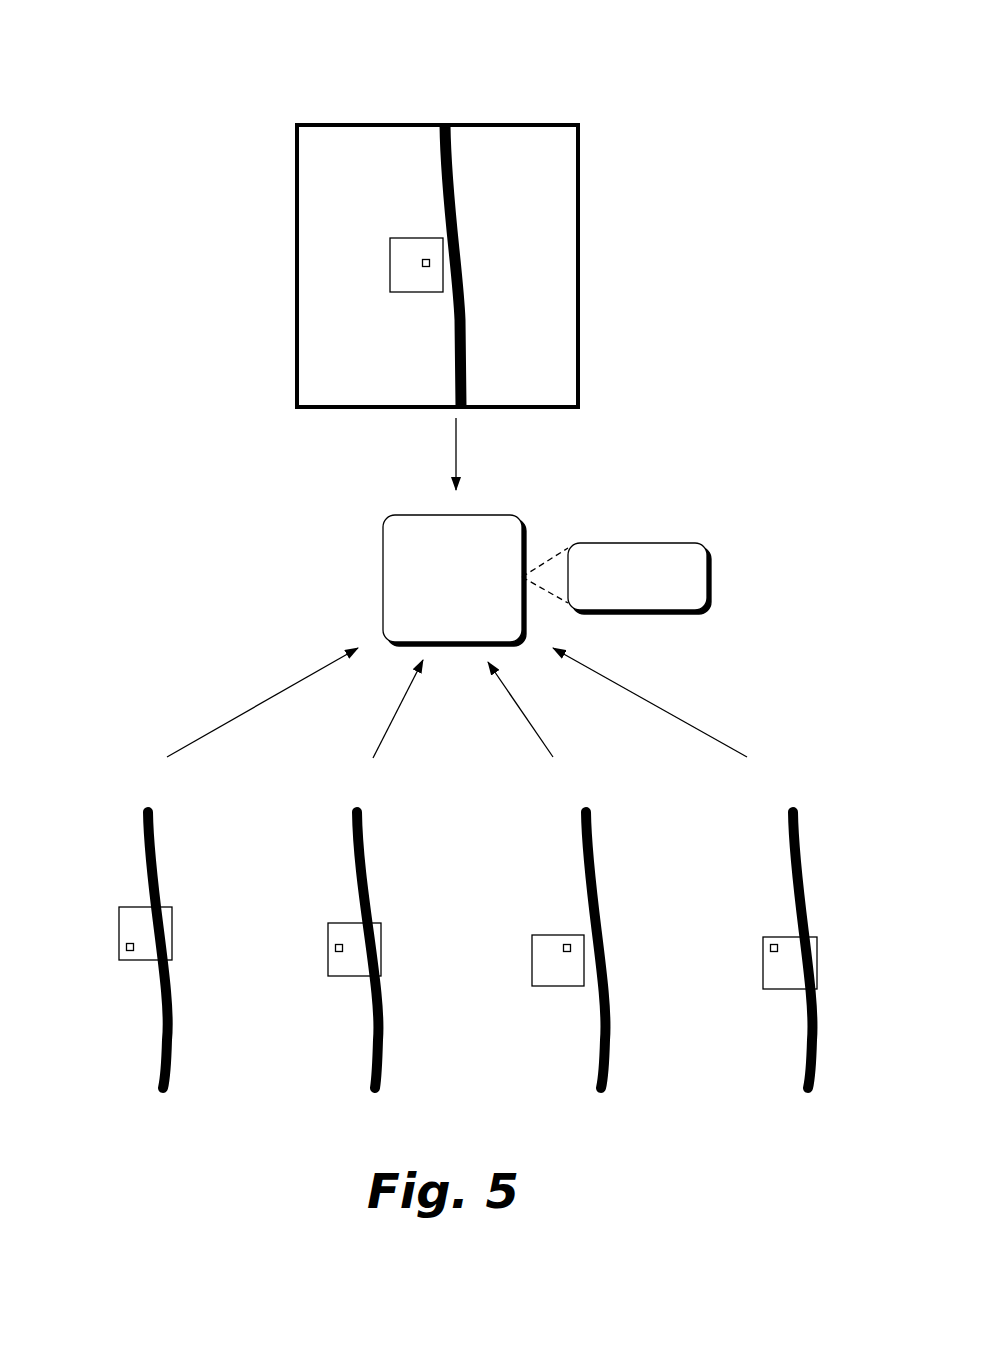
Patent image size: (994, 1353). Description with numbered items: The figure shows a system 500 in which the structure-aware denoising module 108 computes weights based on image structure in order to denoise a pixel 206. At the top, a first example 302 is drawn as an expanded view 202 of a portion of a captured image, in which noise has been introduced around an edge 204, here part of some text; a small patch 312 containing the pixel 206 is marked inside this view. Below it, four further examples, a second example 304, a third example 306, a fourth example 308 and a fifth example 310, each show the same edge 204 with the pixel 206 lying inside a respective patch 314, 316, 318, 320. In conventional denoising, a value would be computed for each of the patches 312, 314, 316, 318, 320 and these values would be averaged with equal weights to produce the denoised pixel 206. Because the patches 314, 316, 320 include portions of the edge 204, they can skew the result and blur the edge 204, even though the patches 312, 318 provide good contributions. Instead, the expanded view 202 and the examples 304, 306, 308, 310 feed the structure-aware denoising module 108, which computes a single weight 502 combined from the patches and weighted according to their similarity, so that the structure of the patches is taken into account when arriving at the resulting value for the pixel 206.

The system 500 is at (148, 72).
The first example 302 is at (260, 180).
The expanded view 202 is at (580, 257).
The edge 204 is at (466, 352).
The pixel 206 is at (426, 257).
The patch 312 is at (417, 293).
The structure-aware denoising module 108 is at (454, 580).
The weight 502 is at (616, 578).
The second example 304 is at (125, 792).
The third example 306 is at (330, 792).
The fourth example 308 is at (558, 792).
The fifth example 310 is at (776, 792).
The patch 314 is at (146, 963).
The patch 316 is at (355, 979).
The patch 318 is at (558, 989).
The patch 320 is at (790, 992).